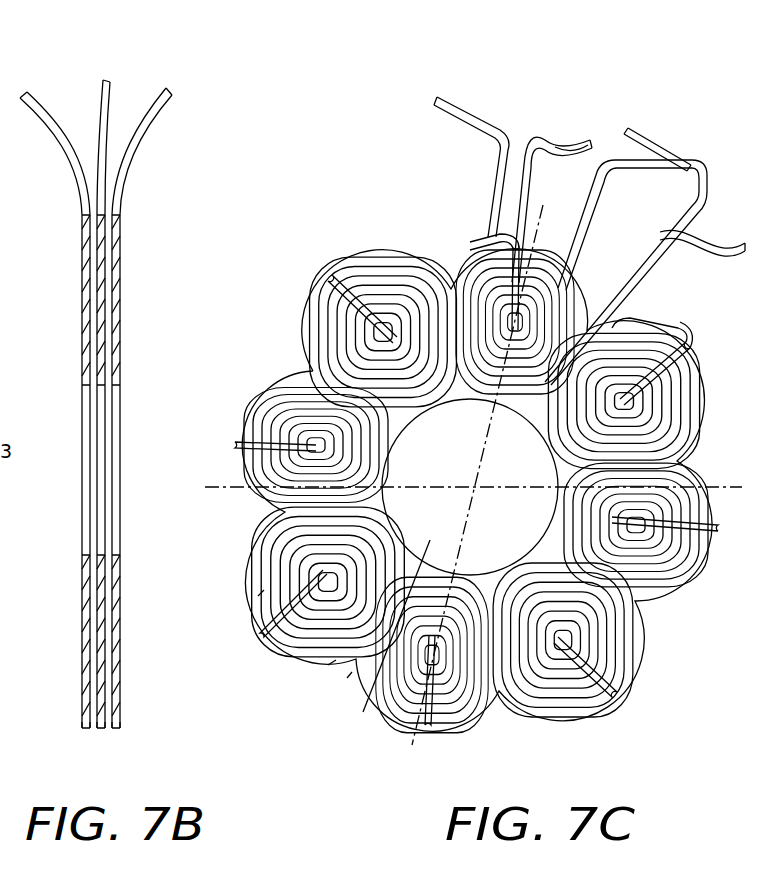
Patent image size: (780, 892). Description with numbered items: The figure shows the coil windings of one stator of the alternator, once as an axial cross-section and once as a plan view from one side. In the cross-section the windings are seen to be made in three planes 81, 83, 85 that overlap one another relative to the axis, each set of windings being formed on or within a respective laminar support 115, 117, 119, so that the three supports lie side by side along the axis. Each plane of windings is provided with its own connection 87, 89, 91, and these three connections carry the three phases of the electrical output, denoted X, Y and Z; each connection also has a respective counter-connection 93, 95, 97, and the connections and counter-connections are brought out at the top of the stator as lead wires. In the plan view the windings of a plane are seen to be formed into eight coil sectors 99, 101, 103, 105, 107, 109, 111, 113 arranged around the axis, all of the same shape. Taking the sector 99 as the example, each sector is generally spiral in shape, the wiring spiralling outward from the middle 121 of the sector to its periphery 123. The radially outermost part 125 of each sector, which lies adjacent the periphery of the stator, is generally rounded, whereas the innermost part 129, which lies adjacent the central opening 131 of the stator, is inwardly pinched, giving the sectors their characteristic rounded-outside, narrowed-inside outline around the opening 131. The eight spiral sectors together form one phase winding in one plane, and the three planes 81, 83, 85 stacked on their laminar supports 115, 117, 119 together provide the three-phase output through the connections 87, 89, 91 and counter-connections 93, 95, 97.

In FIG. 7B, the plane 81 is at (83, 729).
In FIG. 7B, the plane 83 is at (101, 729).
In FIG. 7B, the plane 85 is at (118, 729).
In FIG. 7B, the connection 87 is at (50, 128).
In FIG. 7C, the connection 87 is at (655, 224).
In FIG. 7B, the connection 89 is at (104, 134).
In FIG. 7C, the connection 89 is at (583, 185).
In FIG. 7B, the connection 91 is at (148, 128).
In FIG. 7C, the connection 91 is at (472, 125).
In FIG. 7C, the counter-connection 93 is at (712, 232).
In FIG. 7C, the counter-connection 95 is at (670, 152).
In FIG. 7C, the counter-connection 97 is at (575, 150).
In FIG. 7C, the coil sector 99 is at (262, 640).
In FIG. 7C, the coil sector 101 is at (455, 738).
In FIG. 7C, the coil sector 103 is at (575, 720).
In FIG. 7C, the coil sector 105 is at (705, 565).
In FIG. 7C, the coil sector 107 is at (707, 386).
In FIG. 7C, the coil sector 109 is at (490, 240).
In FIG. 7C, the coil sector 111 is at (388, 253).
In FIG. 7C, the coil sector 113 is at (252, 410).
In FIG. 7B, the laminar support 115 is at (84, 520).
In FIG. 7B, the laminar support 117 is at (105, 458).
In FIG. 7B, the laminar support 119 is at (114, 502).
In FIG. 7C, the laminar support 119 is at (660, 605).
In FIG. 7C, the middle 121 is at (347, 678).
In FIG. 7C, the periphery 123 is at (328, 665).
In FIG. 7C, the radially outermost part 125 is at (260, 593).
In FIG. 7C, the innermost part 129 is at (393, 517).
In FIG. 7C, the opening 131 is at (363, 712).